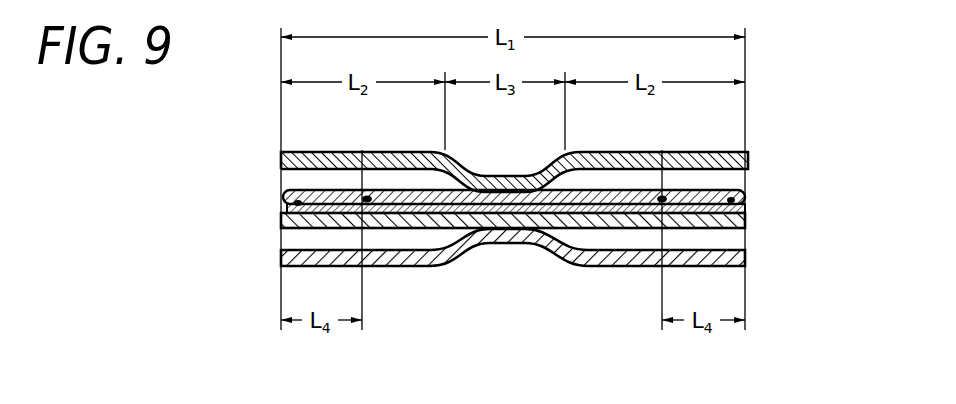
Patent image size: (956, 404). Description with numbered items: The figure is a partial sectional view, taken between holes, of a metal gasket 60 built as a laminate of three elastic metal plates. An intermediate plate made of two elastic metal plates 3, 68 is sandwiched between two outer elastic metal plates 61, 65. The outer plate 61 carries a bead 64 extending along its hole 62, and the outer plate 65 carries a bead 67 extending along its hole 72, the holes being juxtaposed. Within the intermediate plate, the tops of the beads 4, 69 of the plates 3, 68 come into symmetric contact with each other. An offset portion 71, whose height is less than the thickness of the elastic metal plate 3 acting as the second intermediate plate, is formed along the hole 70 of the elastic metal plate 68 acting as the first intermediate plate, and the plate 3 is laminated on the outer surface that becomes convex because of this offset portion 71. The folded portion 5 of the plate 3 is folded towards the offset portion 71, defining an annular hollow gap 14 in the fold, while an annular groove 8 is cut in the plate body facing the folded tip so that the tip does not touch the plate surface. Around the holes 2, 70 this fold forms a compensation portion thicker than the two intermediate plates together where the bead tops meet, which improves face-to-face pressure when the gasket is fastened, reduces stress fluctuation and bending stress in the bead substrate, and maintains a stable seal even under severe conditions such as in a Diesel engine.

The metal gasket 60 is at (405, 287).
The elastic metal plate 61 is at (694, 152).
The hole 62 is at (281, 153).
The bead 64 is at (500, 177).
The hole 2 is at (283, 194).
The elastic metal plate 3 is at (602, 190).
The annular groove 8 is at (366, 196).
The gap 14 is at (287, 208).
The hole 70 is at (283, 226).
The folded portion 5 is at (283, 242).
The hole 72 is at (283, 258).
The elastic metal plate 65 is at (650, 261).
The elastic metal plate 68 is at (627, 241).
The offset portion 71 is at (430, 267).
The bead 67 is at (497, 241).
The bead 4 is at (512, 233).
The bead 69 is at (535, 244).